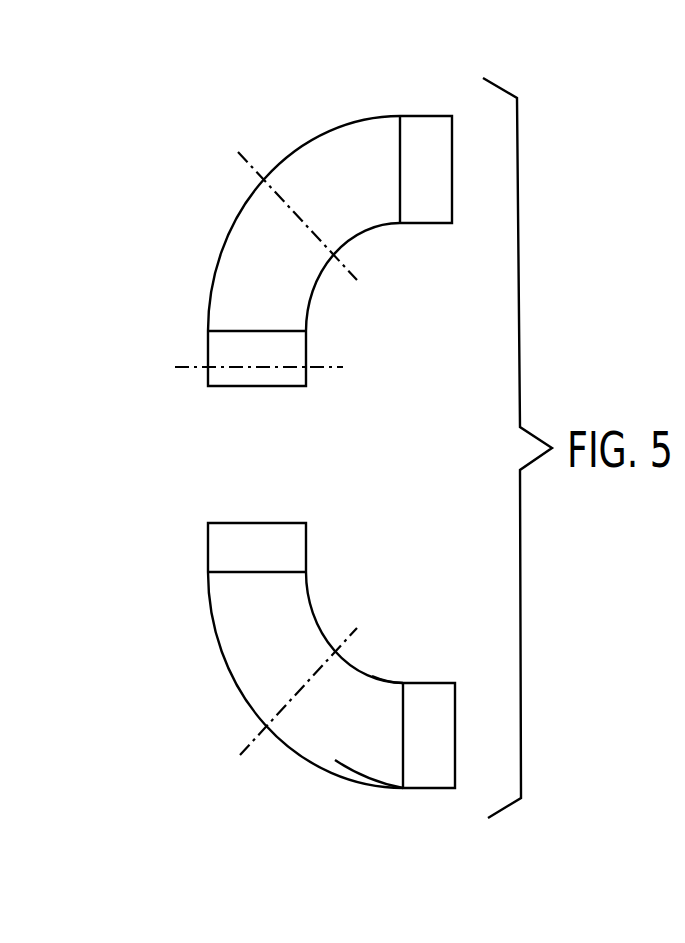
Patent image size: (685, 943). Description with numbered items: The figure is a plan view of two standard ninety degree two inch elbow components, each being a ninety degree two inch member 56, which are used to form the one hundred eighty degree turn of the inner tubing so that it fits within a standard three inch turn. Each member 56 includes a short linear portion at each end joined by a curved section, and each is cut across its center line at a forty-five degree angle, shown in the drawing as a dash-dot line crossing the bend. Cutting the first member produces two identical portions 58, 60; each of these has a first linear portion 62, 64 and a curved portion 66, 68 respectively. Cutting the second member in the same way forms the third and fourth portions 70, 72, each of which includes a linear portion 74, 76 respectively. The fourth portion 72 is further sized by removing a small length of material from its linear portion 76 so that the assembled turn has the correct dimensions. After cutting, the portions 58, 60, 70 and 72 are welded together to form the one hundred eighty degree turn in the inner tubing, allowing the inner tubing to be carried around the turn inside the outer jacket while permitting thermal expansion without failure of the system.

The ninety degree two inch member 56 is at (304, 455).
The first portion 58 is at (312, 612).
The second portion 60 is at (365, 789).
The first linear portion 62 is at (213, 545).
The first linear portion 64 is at (437, 780).
The curved portion 66 is at (220, 658).
The curved portion 68 is at (372, 675).
The third portion 70 is at (366, 232).
The fourth portion 72 is at (216, 258).
The linear portion 74 is at (413, 127).
The linear portion 76 is at (218, 350).